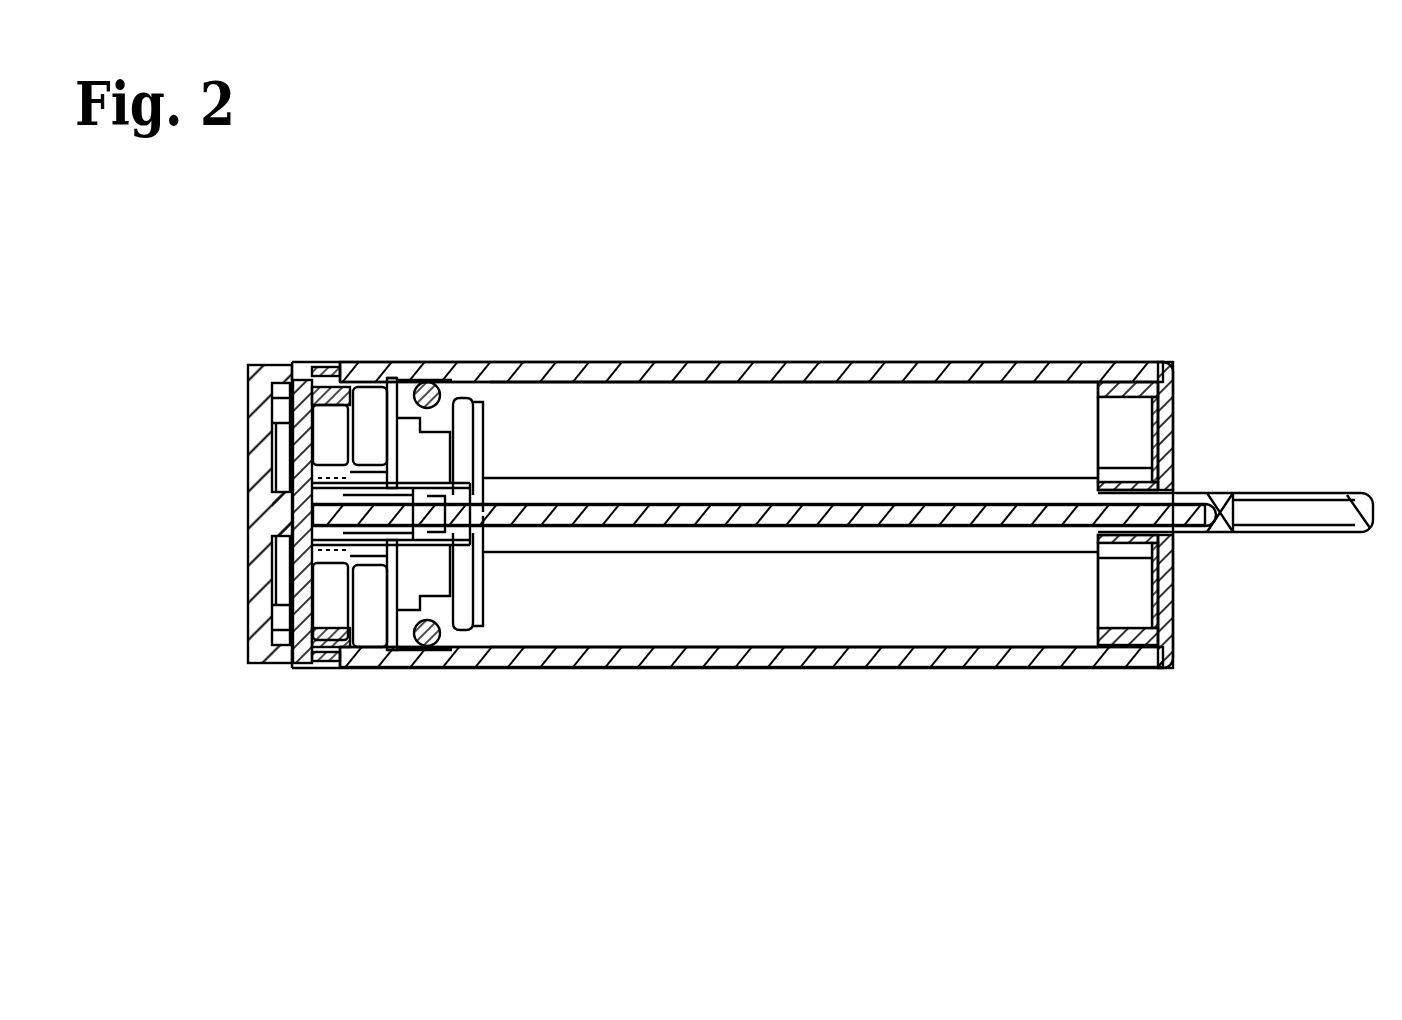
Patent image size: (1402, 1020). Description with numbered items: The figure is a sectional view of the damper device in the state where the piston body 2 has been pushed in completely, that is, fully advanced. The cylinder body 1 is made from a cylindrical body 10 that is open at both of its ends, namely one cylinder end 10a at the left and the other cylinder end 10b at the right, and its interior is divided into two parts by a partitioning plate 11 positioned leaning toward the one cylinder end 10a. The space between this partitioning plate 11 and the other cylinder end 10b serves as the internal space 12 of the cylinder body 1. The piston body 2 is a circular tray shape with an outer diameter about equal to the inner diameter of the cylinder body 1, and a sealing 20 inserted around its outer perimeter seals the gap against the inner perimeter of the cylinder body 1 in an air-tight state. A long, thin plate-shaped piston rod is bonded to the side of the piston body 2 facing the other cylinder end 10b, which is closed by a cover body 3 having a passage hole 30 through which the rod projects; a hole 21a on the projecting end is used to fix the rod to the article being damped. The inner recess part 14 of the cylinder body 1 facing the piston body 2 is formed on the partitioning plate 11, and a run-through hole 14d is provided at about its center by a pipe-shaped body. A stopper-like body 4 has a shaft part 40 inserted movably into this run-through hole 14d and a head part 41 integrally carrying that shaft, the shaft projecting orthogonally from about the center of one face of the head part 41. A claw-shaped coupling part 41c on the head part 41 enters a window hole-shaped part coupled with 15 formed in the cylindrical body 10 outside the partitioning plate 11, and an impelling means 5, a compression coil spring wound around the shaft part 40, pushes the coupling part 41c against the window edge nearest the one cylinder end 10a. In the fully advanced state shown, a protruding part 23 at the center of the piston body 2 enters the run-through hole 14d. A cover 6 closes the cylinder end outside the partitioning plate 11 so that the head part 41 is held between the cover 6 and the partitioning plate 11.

The cylinder body 1 is at (745, 361).
The piston body 2 is at (466, 438).
The cover body 3 is at (1164, 432).
The stopper-like body 4 is at (268, 446).
The impelling means 5 is at (328, 462).
The cover 6 is at (250, 402).
The cylindrical body 10 is at (847, 361).
The one cylinder end 10a is at (268, 361).
The other cylinder end 10b is at (1128, 361).
The partitioning plate 11 is at (357, 663).
The internal space 12 is at (760, 450).
The inner recess part 14 is at (391, 517).
The run-through hole 14d is at (405, 660).
The part coupled with 15 is at (328, 362).
The sealing 20 is at (440, 645).
The hole 21a is at (1288, 507).
The protruding part 23 is at (455, 500).
The passage hole 30 is at (1123, 540).
The shaft part 40 is at (290, 514).
The head part 41 is at (275, 603).
The coupling part 41c is at (305, 362).